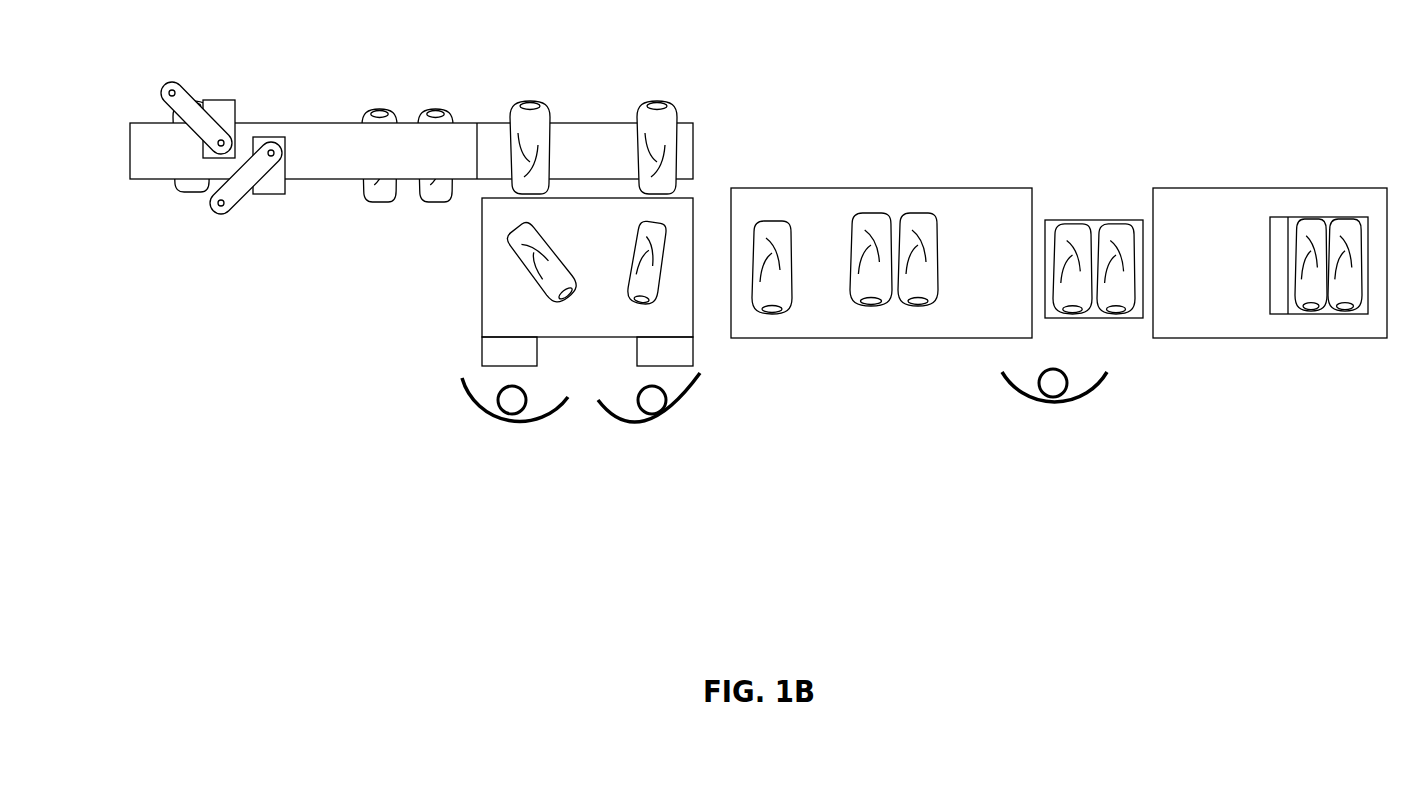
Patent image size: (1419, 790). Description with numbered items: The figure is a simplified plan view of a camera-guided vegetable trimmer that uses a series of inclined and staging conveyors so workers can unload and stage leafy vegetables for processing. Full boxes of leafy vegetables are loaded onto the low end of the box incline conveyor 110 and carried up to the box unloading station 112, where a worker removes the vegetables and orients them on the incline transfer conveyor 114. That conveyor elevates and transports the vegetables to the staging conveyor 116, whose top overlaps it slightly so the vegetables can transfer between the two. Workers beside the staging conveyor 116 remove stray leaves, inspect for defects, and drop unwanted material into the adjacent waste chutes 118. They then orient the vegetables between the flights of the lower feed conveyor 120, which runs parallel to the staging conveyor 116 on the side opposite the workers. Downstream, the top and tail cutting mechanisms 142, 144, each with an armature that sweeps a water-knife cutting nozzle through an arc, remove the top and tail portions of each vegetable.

The box incline conveyor 110 is at (1200, 187).
The box unloading station 112 is at (1068, 218).
The incline transfer conveyor 114 is at (767, 187).
The staging conveyor 116 is at (481, 275).
The waste chutes 118 is at (481, 350).
The lower feed conveyor 120 is at (580, 122).
The top cutting mechanism 142 is at (272, 197).
The tail cutting mechanism 144 is at (218, 98).